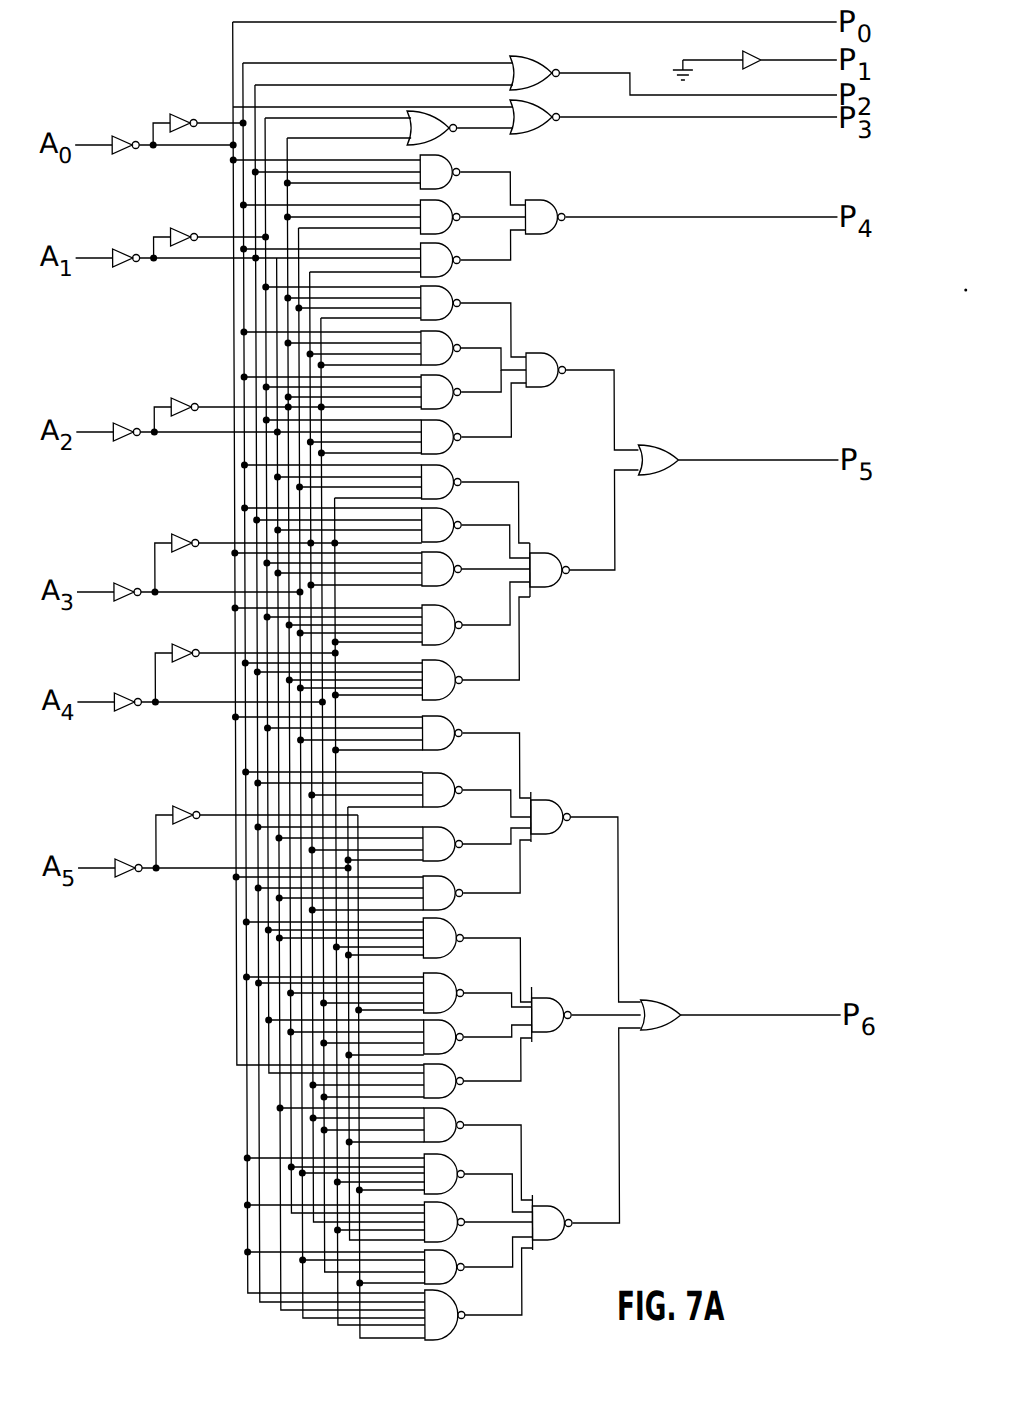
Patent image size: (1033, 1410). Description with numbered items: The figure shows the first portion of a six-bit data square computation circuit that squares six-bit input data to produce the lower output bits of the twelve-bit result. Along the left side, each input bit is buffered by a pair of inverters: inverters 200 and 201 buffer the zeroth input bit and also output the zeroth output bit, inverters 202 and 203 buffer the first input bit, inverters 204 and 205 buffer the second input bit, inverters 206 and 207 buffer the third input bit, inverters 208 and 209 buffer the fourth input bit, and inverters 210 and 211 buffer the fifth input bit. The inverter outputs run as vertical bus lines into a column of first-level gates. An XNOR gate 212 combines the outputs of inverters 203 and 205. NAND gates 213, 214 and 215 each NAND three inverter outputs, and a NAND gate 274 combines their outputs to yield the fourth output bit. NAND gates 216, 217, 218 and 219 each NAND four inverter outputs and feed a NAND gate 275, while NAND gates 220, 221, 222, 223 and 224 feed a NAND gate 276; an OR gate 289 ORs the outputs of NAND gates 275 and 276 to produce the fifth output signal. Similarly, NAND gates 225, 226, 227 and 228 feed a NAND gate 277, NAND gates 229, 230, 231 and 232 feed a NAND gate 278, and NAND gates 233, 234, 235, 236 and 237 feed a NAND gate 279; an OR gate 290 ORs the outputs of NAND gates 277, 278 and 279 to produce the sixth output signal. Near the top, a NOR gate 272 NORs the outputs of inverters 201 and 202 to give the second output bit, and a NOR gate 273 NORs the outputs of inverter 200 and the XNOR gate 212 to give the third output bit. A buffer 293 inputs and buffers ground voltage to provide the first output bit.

The inverter 200 is at (145, 186).
The inverter 201 is at (185, 114).
The inverter 202 is at (152, 285).
The inverter 203 is at (178, 202).
The inverter 204 is at (152, 458).
The inverter 205 is at (182, 398).
The inverter 206 is at (118, 630).
The inverter 207 is at (188, 533).
The inverter 208 is at (150, 728).
The inverter 209 is at (175, 612).
The inverter 210 is at (145, 897).
The inverter 211 is at (180, 806).
The XNOR gate 212 is at (460, 149).
The NAND gate 213 is at (460, 193).
The NAND gate 214 is at (460, 238).
The NAND gate 215 is at (460, 281).
The NAND gate 216 is at (460, 324).
The NAND gate 217 is at (460, 369).
The NAND gate 218 is at (460, 413).
The NAND gate 219 is at (470, 459).
The NAND gate 220 is at (460, 503).
The NAND gate 221 is at (460, 546).
The NAND gate 222 is at (460, 590).
The NAND gate 223 is at (460, 648).
The NAND gate 224 is at (468, 703).
The NAND gate 225 is at (460, 754).
The NAND gate 226 is at (460, 811).
The NAND gate 227 is at (460, 865).
The NAND gate 228 is at (468, 914).
The NAND gate 229 is at (460, 961).
The NAND gate 230 is at (460, 1016).
The NAND gate 231 is at (460, 1058).
The NAND gate 232 is at (468, 1102).
The NAND gate 233 is at (460, 1146).
The NAND gate 234 is at (460, 1197).
The NAND gate 235 is at (460, 1245).
The NAND gate 236 is at (460, 1288).
The NAND gate 237 is at (468, 1340).
The NOR gate 272 is at (570, 96).
The NOR gate 273 is at (568, 141).
The NAND gate 274 is at (580, 188).
The NAND gate 275 is at (560, 338).
The NAND gate 276 is at (555, 537).
The NAND gate 277 is at (565, 780).
The NAND gate 278 is at (555, 982).
The NAND gate 279 is at (587, 1139).
The OR gate 289 is at (676, 428).
The OR gate 290 is at (678, 983).
The buffer 293 is at (752, 50).